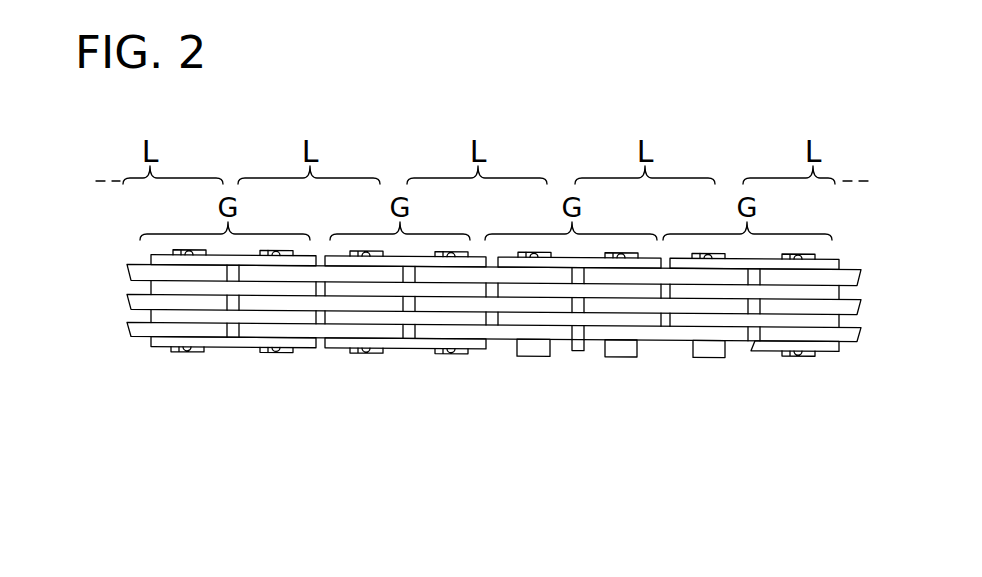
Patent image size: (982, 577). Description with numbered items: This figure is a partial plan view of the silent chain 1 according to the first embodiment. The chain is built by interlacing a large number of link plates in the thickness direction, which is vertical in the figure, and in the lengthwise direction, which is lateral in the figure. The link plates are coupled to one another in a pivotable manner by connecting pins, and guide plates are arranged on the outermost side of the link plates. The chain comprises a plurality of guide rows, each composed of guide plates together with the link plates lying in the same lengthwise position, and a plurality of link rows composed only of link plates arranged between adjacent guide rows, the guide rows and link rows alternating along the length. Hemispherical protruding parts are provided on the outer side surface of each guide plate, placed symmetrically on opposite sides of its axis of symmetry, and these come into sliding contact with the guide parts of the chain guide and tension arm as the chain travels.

The silent chain 1 is at (494, 372).